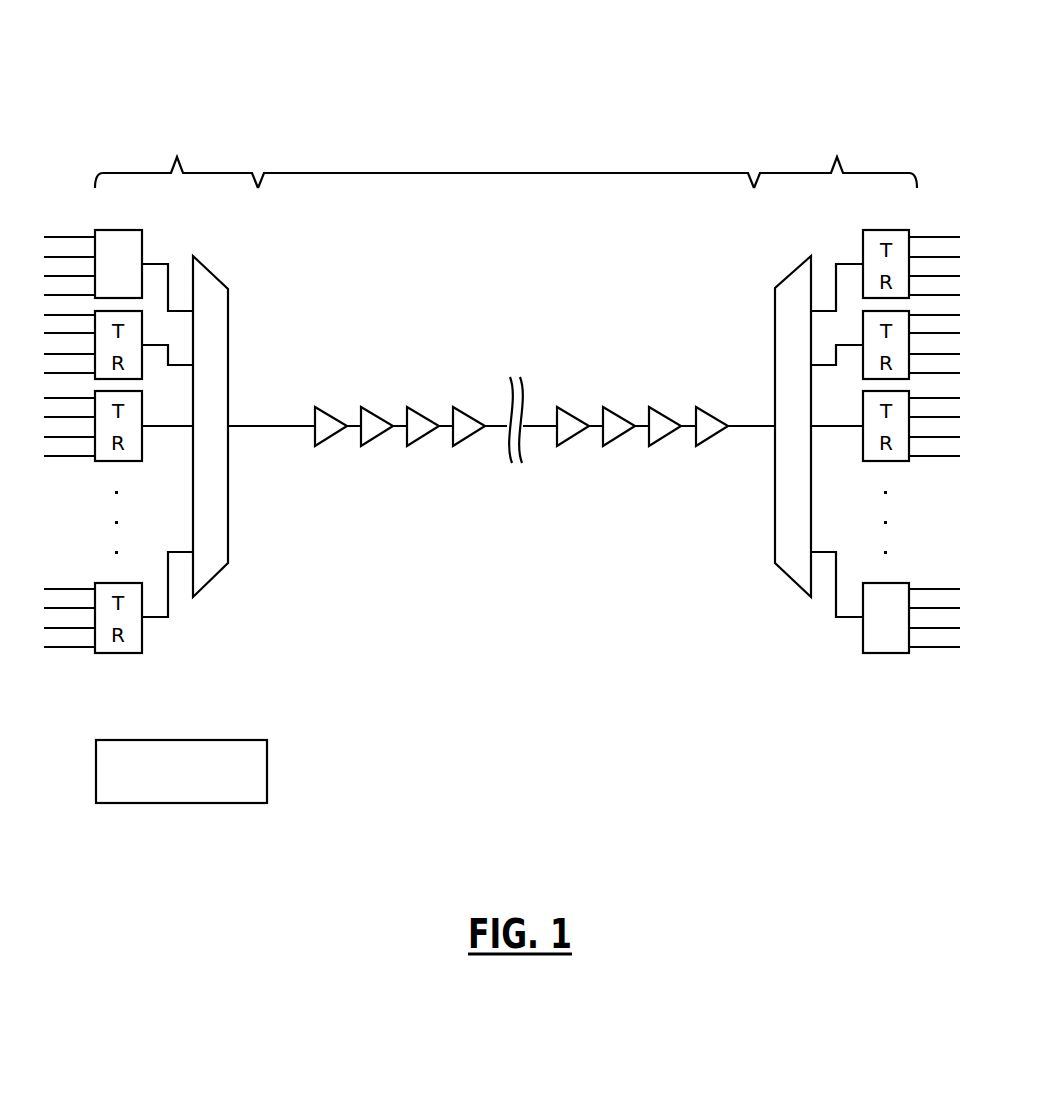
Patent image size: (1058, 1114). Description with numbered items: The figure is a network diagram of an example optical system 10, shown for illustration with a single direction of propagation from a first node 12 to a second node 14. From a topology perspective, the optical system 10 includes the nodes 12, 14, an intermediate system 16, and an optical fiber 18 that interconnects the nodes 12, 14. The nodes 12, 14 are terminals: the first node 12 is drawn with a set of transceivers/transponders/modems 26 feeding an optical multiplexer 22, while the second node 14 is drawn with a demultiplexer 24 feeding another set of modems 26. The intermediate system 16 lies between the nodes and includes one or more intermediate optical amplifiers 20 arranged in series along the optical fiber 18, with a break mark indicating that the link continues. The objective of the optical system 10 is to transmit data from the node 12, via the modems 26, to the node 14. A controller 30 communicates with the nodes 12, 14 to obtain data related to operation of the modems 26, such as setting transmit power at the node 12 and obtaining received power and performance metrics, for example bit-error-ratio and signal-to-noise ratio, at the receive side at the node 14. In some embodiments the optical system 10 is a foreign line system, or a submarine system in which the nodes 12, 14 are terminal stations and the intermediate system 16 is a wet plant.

The optical system 10 is at (530, 20).
The first node 12 is at (178, 124).
The second node 14 is at (838, 124).
The intermediate system 16 is at (509, 124).
The optical fiber 18 is at (298, 427).
The intermediate optical amplifiers 20 is at (330, 414).
The optical multiplexers 22 is at (221, 277).
The demultiplexers 24 is at (773, 535).
The transceivers/transponders/modems 26 is at (142, 232).
The controller 30 is at (235, 740).